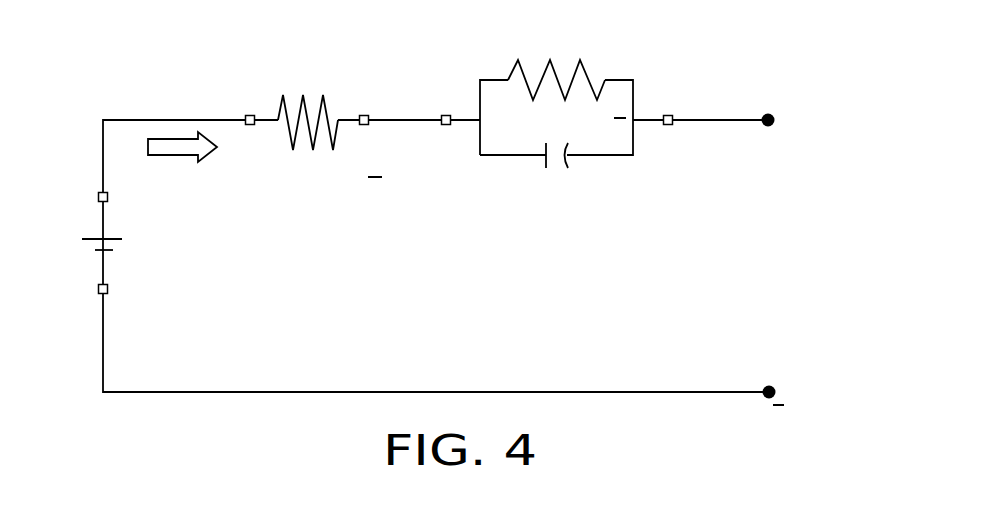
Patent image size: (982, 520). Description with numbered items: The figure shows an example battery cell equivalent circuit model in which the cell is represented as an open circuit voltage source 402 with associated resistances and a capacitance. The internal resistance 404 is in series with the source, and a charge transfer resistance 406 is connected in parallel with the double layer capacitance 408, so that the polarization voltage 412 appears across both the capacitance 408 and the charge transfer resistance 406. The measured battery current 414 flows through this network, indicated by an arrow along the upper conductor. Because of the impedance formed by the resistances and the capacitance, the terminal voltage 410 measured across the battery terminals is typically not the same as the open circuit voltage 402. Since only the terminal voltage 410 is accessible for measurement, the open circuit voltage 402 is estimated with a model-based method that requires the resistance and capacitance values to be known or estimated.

The open circuit voltage source 402 is at (115, 238).
The internal resistance 404 is at (277, 108).
The charge transfer resistance 406 is at (588, 77).
The double layer capacitance 408 is at (544, 158).
The terminal voltage 410 is at (778, 245).
The voltage across capacitance 412 is at (542, 121).
The battery current 414 is at (162, 95).